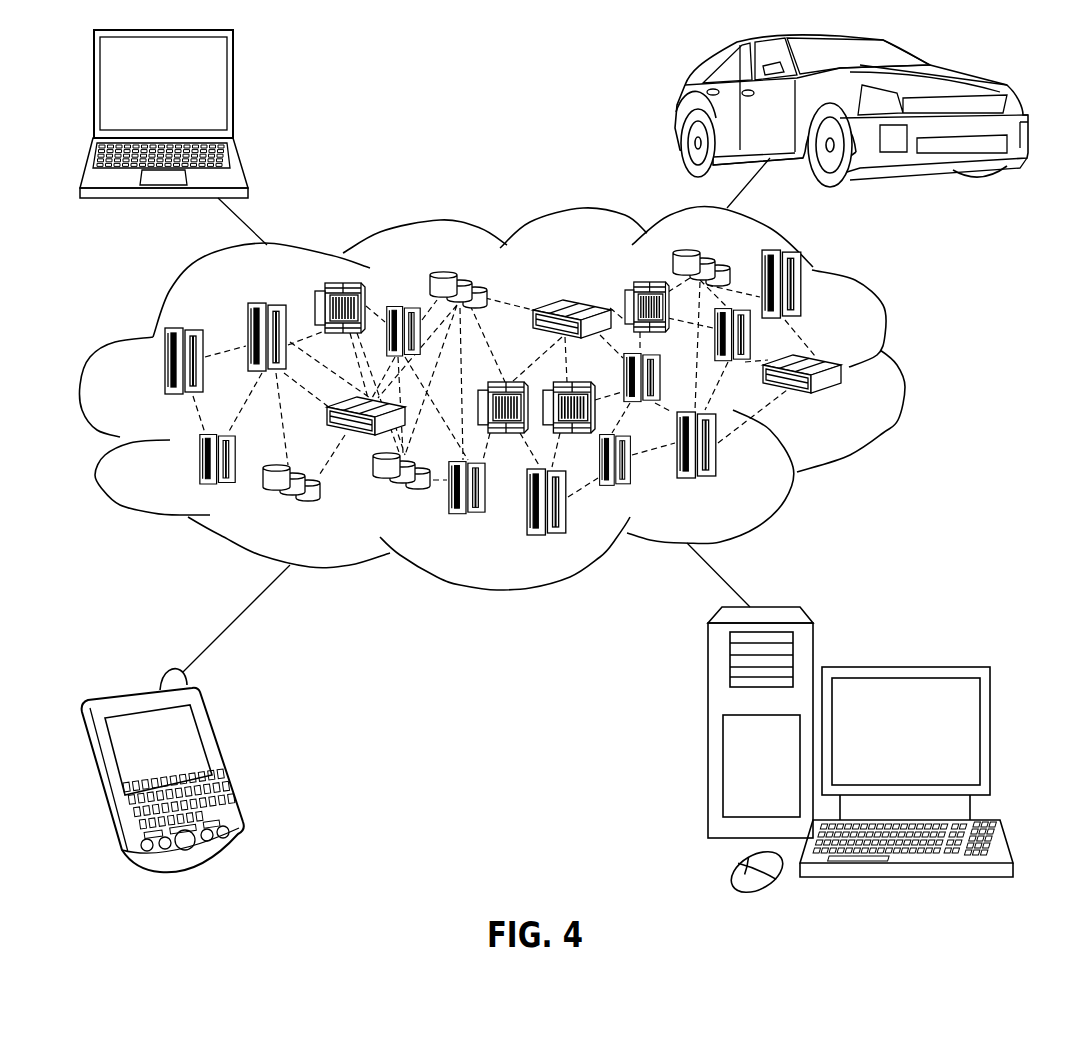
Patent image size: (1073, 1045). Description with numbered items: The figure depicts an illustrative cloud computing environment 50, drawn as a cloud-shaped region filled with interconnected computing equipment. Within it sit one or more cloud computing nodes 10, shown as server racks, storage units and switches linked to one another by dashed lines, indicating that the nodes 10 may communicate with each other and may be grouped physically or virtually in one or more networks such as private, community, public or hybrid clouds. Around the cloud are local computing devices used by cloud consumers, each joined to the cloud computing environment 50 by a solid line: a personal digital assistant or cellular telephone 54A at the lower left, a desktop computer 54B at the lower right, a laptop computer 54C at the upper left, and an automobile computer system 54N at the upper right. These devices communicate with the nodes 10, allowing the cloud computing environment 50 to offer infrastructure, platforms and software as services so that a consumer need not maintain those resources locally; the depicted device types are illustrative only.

The cloud computing node 10 is at (852, 404).
The cloud computing environment 50 is at (525, 398).
The personal digital assistant or cellular telephone 54A is at (223, 761).
The desktop computer 54B is at (902, 667).
The laptop computer 54C is at (234, 92).
The automobile computer system 54N is at (680, 112).